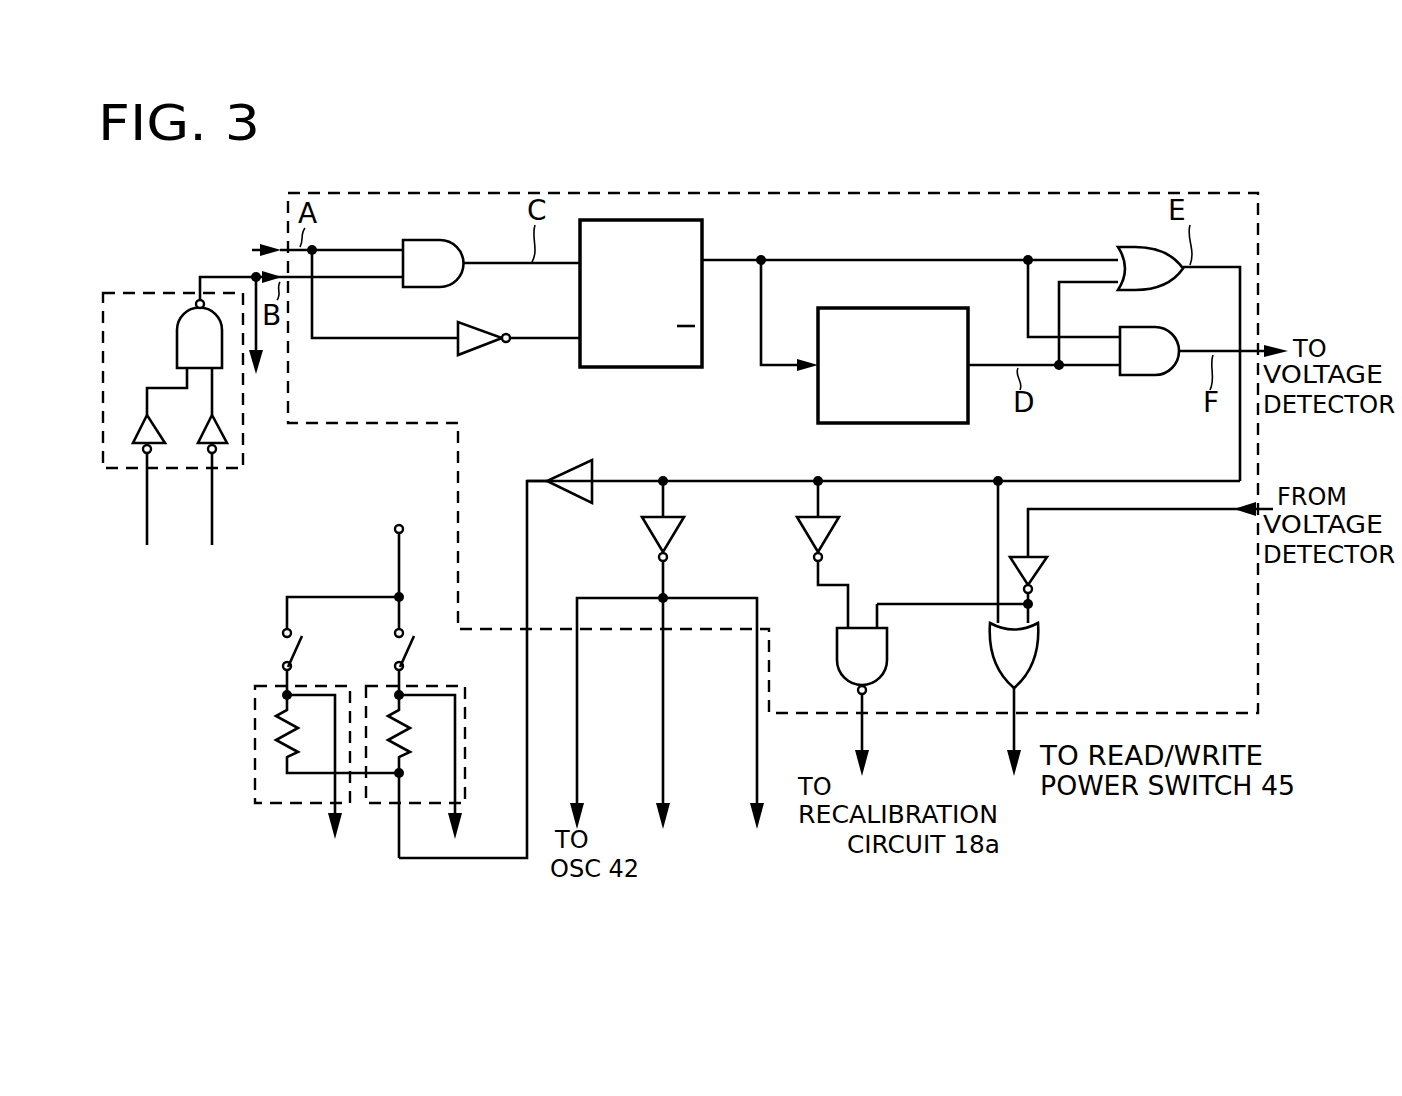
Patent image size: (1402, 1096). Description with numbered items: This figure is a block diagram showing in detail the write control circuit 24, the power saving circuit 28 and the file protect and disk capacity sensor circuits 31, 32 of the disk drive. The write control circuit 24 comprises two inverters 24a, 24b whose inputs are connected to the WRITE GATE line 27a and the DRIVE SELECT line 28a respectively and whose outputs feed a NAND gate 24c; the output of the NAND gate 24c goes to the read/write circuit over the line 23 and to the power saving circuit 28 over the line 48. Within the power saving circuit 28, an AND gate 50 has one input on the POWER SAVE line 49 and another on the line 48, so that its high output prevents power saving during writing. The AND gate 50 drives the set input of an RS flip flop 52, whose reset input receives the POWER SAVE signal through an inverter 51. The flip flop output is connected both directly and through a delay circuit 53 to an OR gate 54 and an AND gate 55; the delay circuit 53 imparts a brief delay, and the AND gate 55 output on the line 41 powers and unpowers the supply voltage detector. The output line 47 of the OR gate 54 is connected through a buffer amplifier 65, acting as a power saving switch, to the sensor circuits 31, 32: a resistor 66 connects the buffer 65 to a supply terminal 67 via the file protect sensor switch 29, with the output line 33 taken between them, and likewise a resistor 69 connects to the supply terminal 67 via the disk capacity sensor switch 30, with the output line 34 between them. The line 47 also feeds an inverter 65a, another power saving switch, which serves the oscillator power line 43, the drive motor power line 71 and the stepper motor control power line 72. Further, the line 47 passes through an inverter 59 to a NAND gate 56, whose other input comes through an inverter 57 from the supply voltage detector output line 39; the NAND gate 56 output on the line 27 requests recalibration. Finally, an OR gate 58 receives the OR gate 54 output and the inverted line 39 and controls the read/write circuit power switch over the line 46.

The power saving circuit 28 is at (882, 192).
The POWER SAVE line 49 is at (253, 246).
The line 48 is at (219, 274).
The line 23 is at (267, 327).
The AND gate 50 is at (430, 240).
The inverter 51 is at (485, 358).
The RS flip flop 52 is at (643, 369).
The delay circuit 53 is at (890, 307).
The OR gate 54 is at (1133, 246).
The AND gate 55 is at (1150, 377).
The output line 47 is at (1240, 265).
The line 41 is at (1255, 349).
The line 39 is at (1265, 507).
The buffer amplifier 65 is at (565, 470).
The inverter 65a is at (645, 543).
The line 71 is at (663, 715).
The oscillator power line 43 is at (577, 715).
The line 72 is at (758, 762).
The inverter 59 is at (806, 543).
The NAND gate 56 is at (888, 652).
The line 27 is at (866, 735).
The inverter 57 is at (1045, 572).
The OR gate 58 is at (1040, 650).
The line 46 is at (1008, 735).
The write control circuit 24 is at (244, 466).
The NAND gate 24c is at (176, 333).
The inverter 24a is at (147, 410).
The inverter 24b is at (205, 432).
The WRITE GATE line 27a is at (147, 511).
The DRIVE SELECT line 28a is at (212, 512).
The supply terminal 67 is at (394, 530).
The file protect sensor switch 29 is at (281, 650).
The disk capacity sensor switch 30 is at (395, 650).
The file protect sensor circuit 31 is at (255, 700).
The disk capacity sensor circuit 32 is at (466, 775).
The resistor 66 is at (298, 756).
The resistor 69 is at (408, 762).
The output line 33 is at (338, 816).
The output line 34 is at (460, 812).